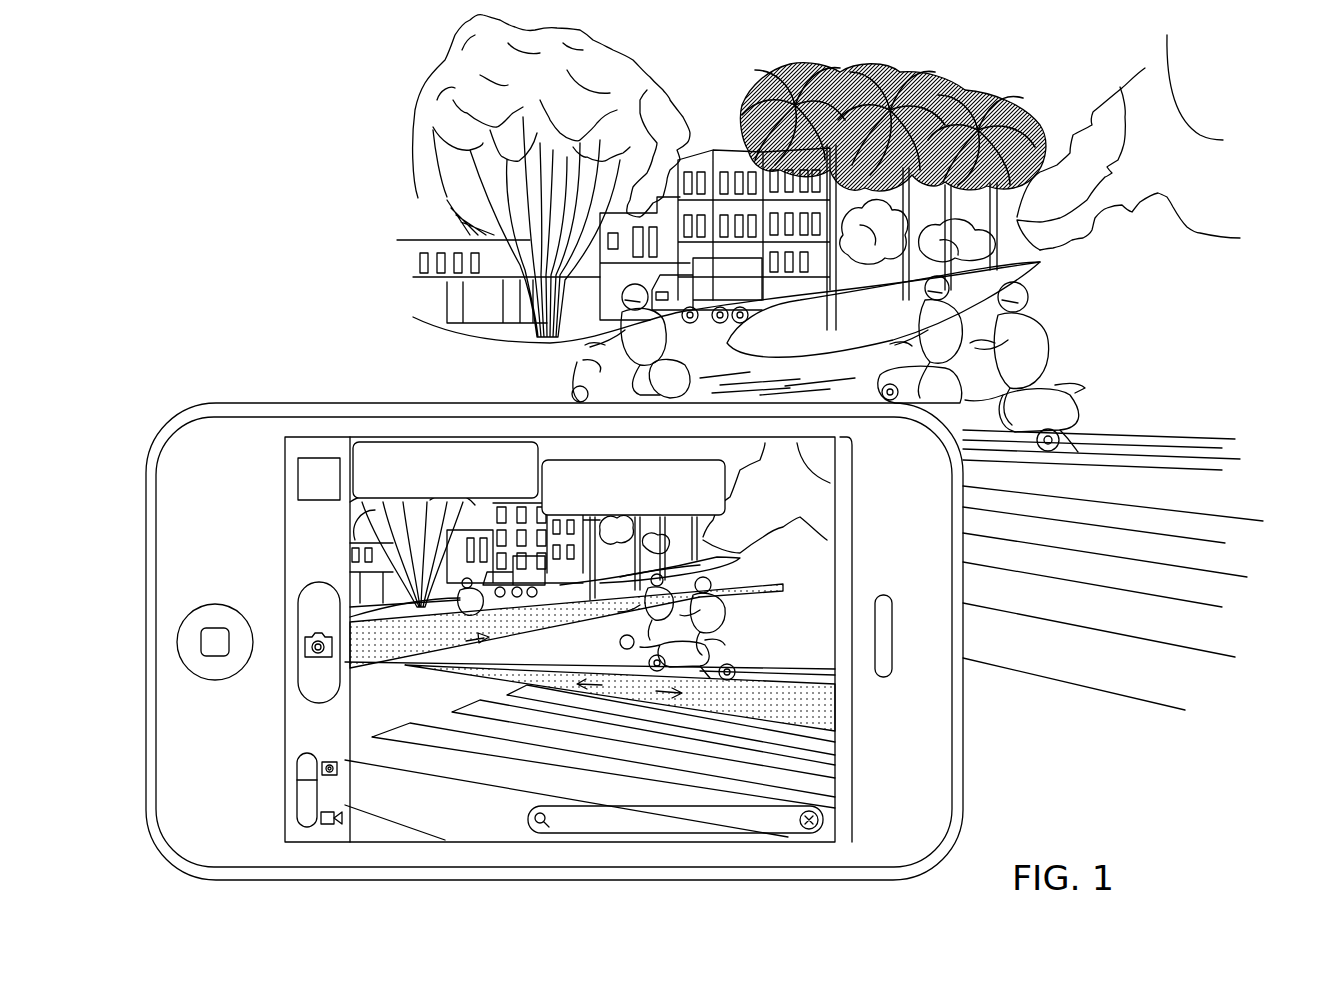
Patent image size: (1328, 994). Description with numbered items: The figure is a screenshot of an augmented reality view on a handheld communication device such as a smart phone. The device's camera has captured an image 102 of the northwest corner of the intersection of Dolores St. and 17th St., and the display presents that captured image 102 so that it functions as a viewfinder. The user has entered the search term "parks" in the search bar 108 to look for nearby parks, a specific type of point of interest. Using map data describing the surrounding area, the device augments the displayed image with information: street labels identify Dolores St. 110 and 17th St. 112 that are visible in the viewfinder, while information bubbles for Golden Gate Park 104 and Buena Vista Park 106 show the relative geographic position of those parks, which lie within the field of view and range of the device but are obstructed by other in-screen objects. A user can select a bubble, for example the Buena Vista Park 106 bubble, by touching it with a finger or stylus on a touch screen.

The captured image 102 is at (853, 632).
The Golden Gate Park point of interest bubble 104 is at (397, 452).
The Buena Vista Park point of interest bubble 106 is at (547, 460).
The search bar 108 is at (687, 823).
The Dolores St. street label 110 is at (403, 655).
The 17th St. street label 112 is at (633, 697).